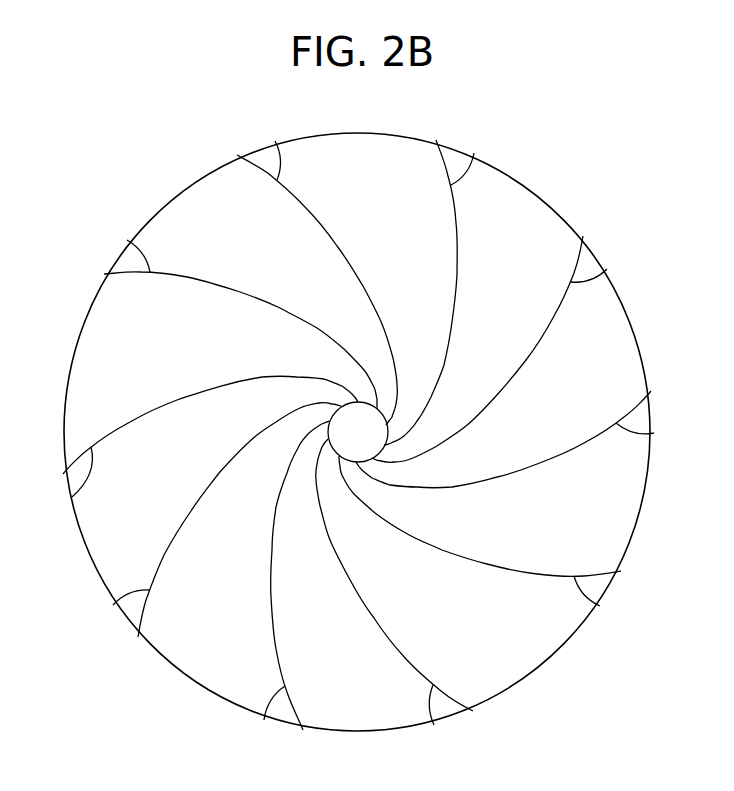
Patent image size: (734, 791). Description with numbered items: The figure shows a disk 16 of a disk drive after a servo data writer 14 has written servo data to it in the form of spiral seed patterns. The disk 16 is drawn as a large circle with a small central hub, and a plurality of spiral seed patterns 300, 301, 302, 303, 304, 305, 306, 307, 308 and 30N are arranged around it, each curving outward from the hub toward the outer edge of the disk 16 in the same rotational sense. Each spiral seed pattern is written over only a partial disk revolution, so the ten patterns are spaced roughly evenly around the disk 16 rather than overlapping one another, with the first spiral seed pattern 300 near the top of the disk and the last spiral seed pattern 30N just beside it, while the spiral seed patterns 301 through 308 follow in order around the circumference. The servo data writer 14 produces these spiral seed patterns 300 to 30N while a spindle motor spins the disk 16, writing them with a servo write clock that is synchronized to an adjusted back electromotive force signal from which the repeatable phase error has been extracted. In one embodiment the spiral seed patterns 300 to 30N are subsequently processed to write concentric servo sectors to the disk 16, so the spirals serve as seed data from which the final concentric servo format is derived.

The servo data writer 14 is at (0, 152).
The disk 16 is at (546, 190).
The spiral seed pattern 300 is at (474, 153).
The spiral seed pattern 301 is at (607, 269).
The spiral seed pattern 302 is at (654, 433).
The spiral seed pattern 303 is at (600, 606).
The spiral seed pattern 304 is at (434, 725).
The spiral seed pattern 305 is at (264, 720).
The spiral seed pattern 306 is at (113, 605).
The spiral seed pattern 307 is at (72, 497).
The spiral seed pattern 308 is at (127, 240).
The spiral seed pattern 30N is at (275, 141).